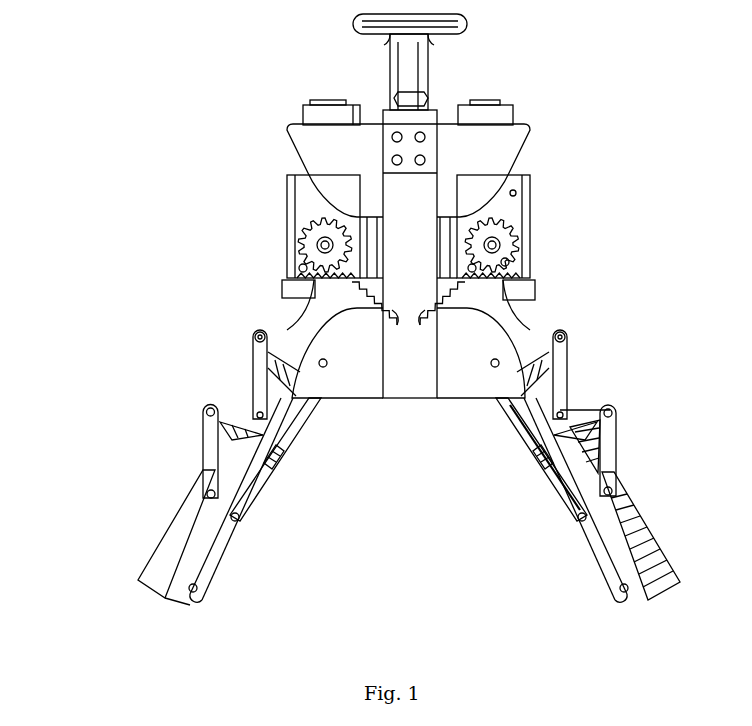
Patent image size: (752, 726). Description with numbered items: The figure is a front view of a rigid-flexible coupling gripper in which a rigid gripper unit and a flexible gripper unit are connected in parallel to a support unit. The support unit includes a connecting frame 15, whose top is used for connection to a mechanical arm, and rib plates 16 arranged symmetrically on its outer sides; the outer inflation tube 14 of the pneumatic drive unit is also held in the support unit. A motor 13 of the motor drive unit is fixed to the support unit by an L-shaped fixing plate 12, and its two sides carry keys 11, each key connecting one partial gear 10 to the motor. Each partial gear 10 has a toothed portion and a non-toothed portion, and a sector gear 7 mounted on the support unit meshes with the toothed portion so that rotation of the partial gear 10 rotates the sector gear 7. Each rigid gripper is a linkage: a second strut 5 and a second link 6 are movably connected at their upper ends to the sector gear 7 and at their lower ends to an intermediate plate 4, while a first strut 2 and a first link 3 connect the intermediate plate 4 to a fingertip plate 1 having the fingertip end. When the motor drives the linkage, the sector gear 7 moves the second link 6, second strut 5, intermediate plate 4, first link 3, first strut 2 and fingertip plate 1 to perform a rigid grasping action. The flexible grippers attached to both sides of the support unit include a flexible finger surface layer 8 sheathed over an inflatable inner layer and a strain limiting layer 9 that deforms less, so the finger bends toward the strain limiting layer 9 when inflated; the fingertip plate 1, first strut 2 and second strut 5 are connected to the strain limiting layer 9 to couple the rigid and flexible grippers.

The fingertip plate 1 is at (205, 561).
The first strut 2 is at (248, 496).
The first link 3 is at (207, 488).
The intermediate plate 4 is at (265, 433).
The second strut 5 is at (293, 419).
The second link 6 is at (258, 367).
The sector gear 7 is at (340, 300).
The flexible finger surface layer 8 is at (188, 528).
The strain limiting layer 9 is at (188, 603).
The partial gear 10 is at (503, 261).
The key 11 is at (492, 237).
The L-shaped fixing plate 12 is at (518, 202).
The motor 13 is at (490, 118).
The outer inflation tube 14 is at (413, 97).
The connecting frame 15 is at (413, 65).
The rib plate 16 is at (475, 343).